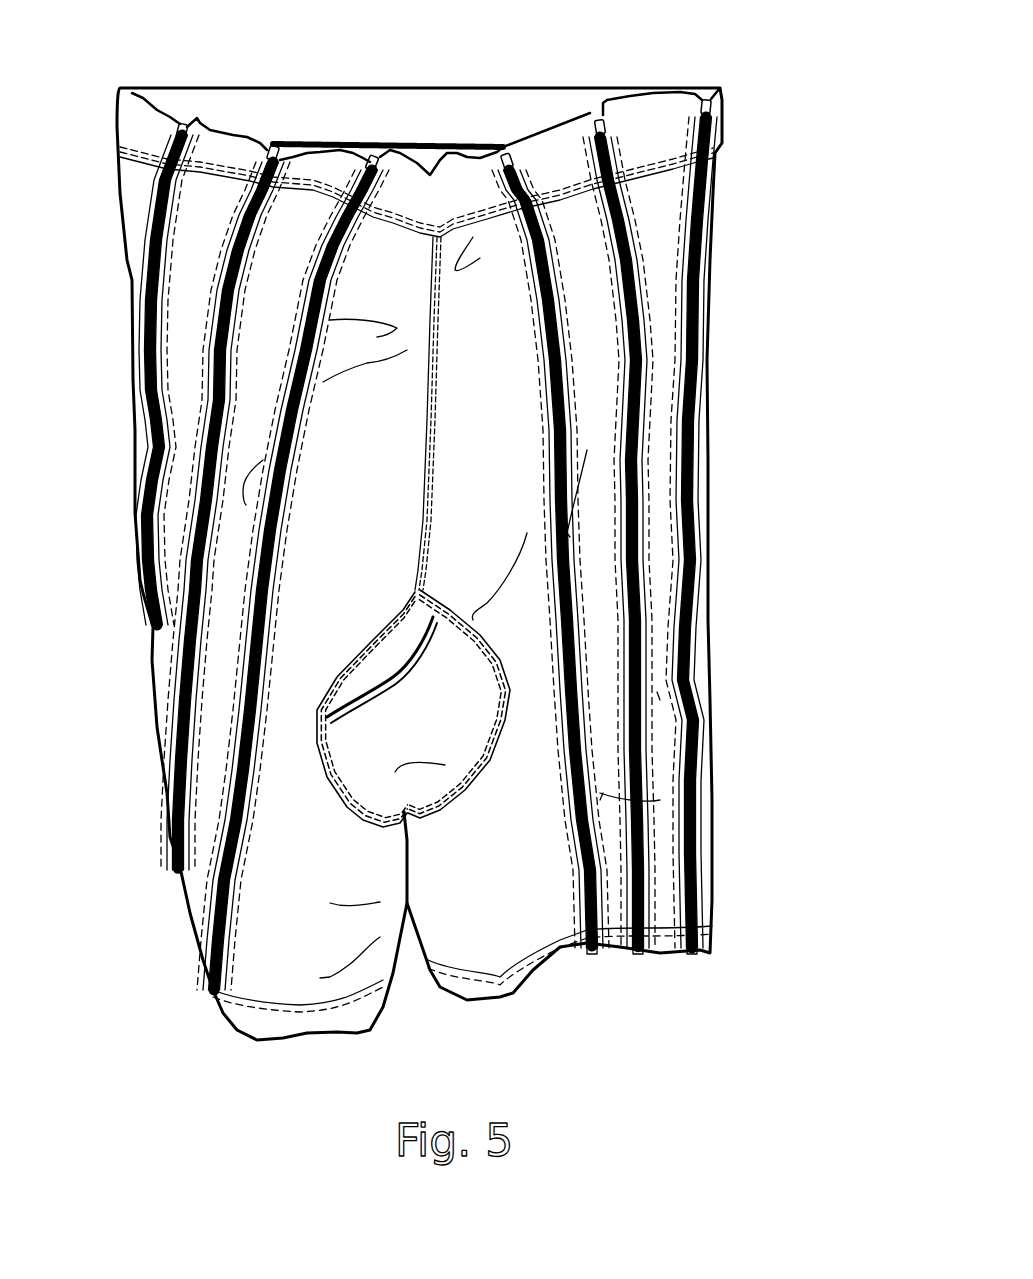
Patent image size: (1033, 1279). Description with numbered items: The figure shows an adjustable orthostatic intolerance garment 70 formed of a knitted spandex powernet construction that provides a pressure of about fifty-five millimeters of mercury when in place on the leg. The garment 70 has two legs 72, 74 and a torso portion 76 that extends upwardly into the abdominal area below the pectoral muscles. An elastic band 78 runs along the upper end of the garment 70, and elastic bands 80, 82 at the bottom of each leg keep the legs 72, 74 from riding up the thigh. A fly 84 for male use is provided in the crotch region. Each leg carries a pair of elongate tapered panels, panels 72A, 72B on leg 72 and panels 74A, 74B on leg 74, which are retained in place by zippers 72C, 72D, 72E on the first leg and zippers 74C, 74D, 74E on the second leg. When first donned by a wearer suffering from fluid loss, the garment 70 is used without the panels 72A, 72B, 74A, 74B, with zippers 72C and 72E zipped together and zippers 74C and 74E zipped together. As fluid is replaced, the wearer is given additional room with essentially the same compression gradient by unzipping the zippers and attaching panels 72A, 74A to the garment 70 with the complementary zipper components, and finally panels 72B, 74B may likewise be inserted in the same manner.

The garment 70 is at (745, 468).
The leg 72 is at (277, 933).
The elongate tapered panel 72A is at (187, 268).
The elongate tapered panel 72B is at (243, 413).
The zipper 72C is at (185, 124).
The zipper 72D is at (276, 146).
The zipper 72E is at (378, 156).
The leg 74 is at (553, 900).
The elongate tapered panel 74A is at (657, 692).
The elongate tapered panel 74B is at (603, 793).
The zipper 74C is at (688, 152).
The zipper 74D is at (625, 150).
The zipper 74E is at (535, 182).
The torso portion 76 is at (500, 296).
The elastic band 78 is at (415, 100).
The elastic band 80 is at (272, 1030).
The elastic band 82 is at (498, 988).
The fly 84 is at (430, 749).